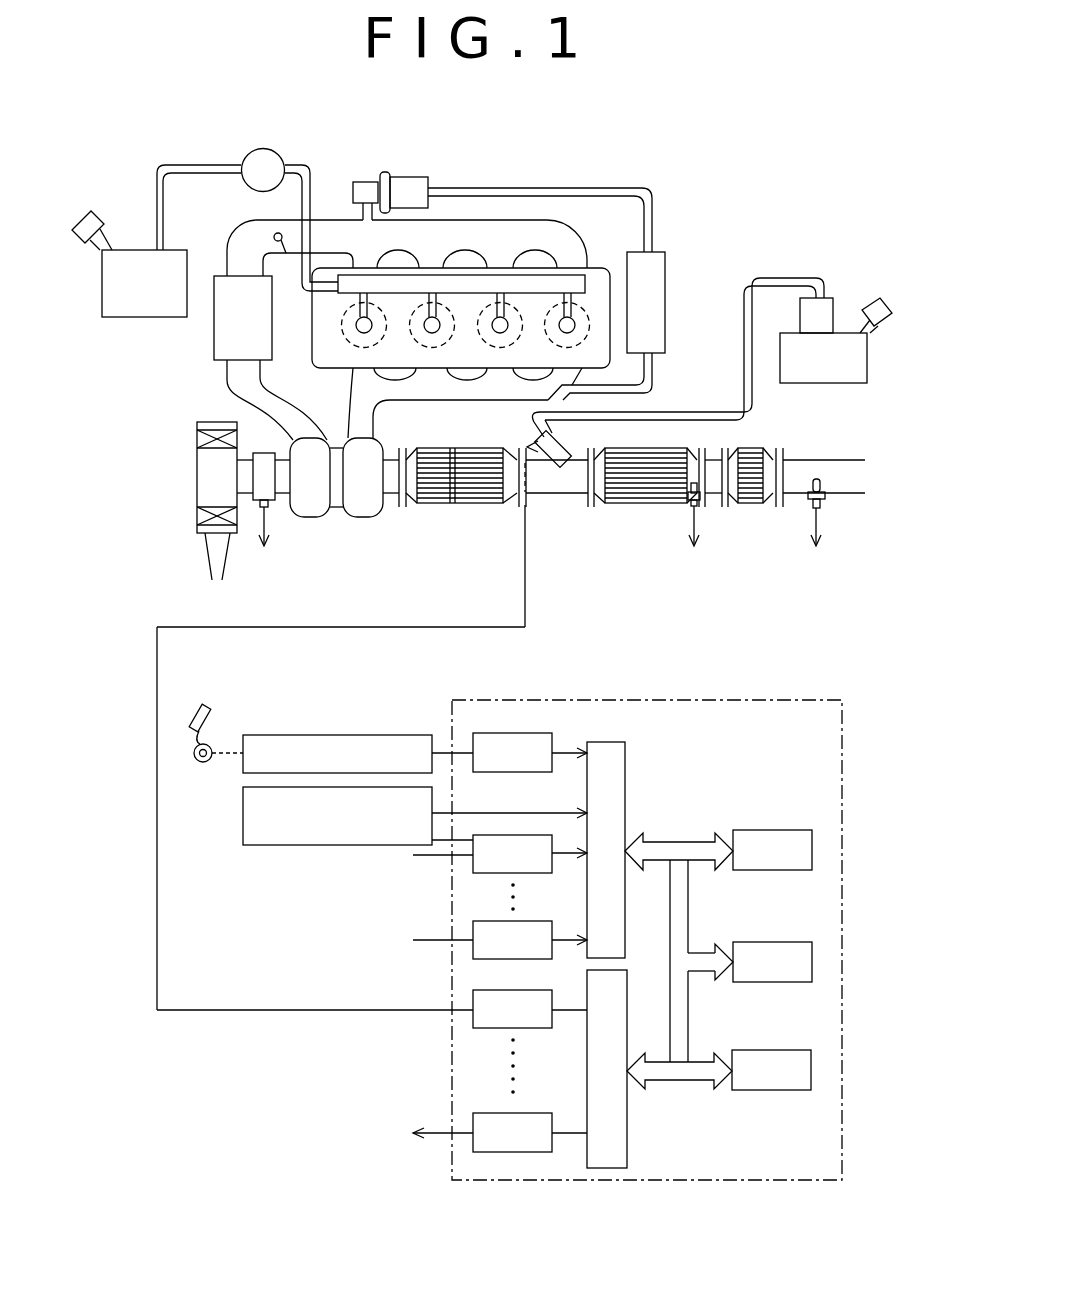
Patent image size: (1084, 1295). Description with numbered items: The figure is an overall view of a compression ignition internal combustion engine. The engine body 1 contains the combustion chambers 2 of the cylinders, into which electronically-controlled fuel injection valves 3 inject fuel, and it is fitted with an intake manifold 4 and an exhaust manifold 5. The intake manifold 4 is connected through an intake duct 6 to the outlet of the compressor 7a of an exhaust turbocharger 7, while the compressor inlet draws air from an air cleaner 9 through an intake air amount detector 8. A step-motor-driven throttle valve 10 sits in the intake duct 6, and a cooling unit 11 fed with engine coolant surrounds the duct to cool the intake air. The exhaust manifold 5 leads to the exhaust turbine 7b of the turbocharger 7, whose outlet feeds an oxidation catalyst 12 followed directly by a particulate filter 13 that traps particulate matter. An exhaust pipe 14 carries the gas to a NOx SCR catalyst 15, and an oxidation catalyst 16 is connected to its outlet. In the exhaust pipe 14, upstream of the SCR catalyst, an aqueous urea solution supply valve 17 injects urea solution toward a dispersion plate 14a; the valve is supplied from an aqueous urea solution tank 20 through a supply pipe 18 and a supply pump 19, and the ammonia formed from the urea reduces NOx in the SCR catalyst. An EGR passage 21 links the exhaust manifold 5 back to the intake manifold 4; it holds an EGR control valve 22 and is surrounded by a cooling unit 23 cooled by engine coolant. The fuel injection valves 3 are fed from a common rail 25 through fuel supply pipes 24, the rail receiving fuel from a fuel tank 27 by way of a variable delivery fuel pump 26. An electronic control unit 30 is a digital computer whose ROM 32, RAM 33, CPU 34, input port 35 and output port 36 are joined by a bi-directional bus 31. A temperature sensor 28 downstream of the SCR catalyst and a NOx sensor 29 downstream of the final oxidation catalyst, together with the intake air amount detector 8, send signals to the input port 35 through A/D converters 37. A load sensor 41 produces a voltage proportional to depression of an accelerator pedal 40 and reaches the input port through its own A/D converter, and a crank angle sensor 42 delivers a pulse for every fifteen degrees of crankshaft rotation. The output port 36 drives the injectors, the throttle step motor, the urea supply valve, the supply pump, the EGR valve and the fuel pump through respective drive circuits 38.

The engine body 1 is at (612, 262).
The combustion chamber 2 is at (346, 344).
The fuel injection valve 3 is at (350, 325).
The intake manifold 4 is at (557, 233).
The exhaust manifold 5 is at (464, 400).
The intake duct 6 is at (232, 250).
The exhaust turbocharger 7 is at (336, 518).
The compressor 7a is at (309, 518).
The exhaust turbine 7b is at (364, 518).
The intake air amount detector 8 is at (277, 502).
The air cleaner 9 is at (203, 490).
The throttle valve 10 is at (274, 233).
The cooling unit 11 is at (214, 349).
The oxidation catalyst 12 is at (440, 504).
The particulate filter 13 is at (480, 504).
The exhaust pipe 14 is at (535, 494).
The dispersion plate 14a is at (580, 463).
The NOx SCR catalyst 15 is at (633, 504).
The oxidation catalyst 16 is at (752, 504).
The aqueous urea solution supply valve 17 is at (554, 431).
The supply pipe 18 is at (753, 397).
The supply pump 19 is at (840, 332).
The aqueous urea solution tank 20 is at (830, 370).
The EGR passage 21 is at (500, 188).
The EGR control valve 22 is at (368, 192).
The cooling unit 23 is at (668, 300).
The fuel supply pipe 24 is at (352, 311).
The common rail 25 is at (478, 275).
The fuel pump 26 is at (250, 150).
The fuel tank 27 is at (124, 306).
The temperature sensor 28 is at (692, 508).
The NOx sensor 29 is at (826, 500).
The electronic control unit 30 is at (846, 738).
The bi-directional bus 31 is at (673, 840).
The ROM 32 is at (760, 830).
The RAM 33 is at (763, 942).
The CPU 34 is at (762, 1050).
The input port 35 is at (607, 742).
The output port 36 is at (628, 1122).
The A/D converter 37 is at (497, 733).
The drive circuit 38 is at (473, 1025).
The accelerator pedal 40 is at (208, 718).
The load sensor 41 is at (376, 735).
The crank angle sensor 42 is at (315, 846).